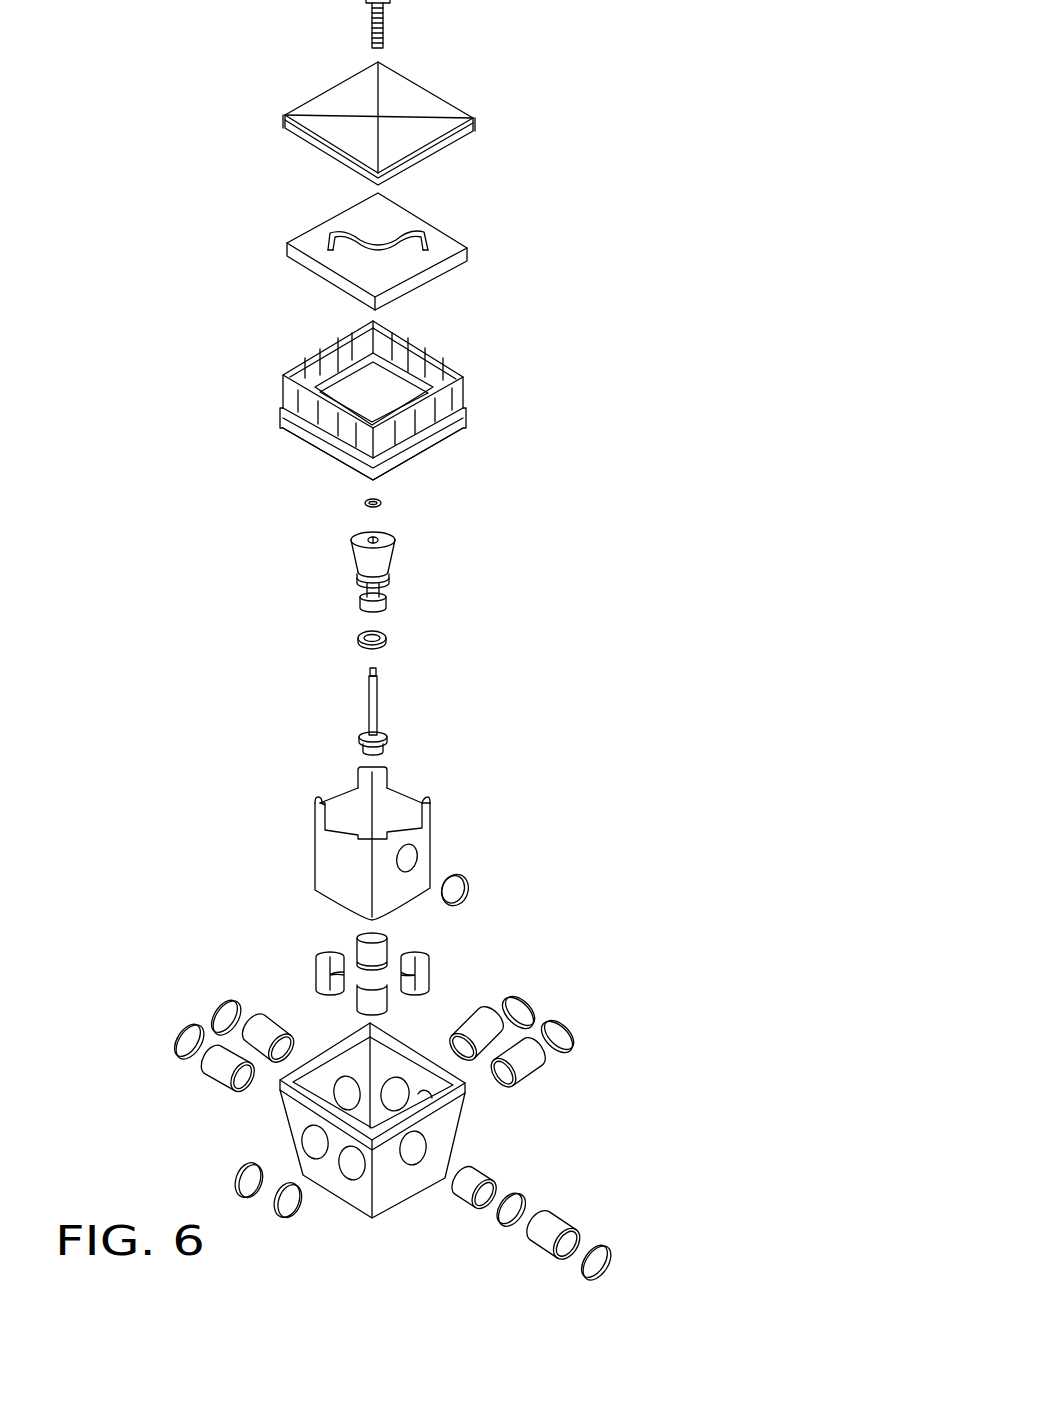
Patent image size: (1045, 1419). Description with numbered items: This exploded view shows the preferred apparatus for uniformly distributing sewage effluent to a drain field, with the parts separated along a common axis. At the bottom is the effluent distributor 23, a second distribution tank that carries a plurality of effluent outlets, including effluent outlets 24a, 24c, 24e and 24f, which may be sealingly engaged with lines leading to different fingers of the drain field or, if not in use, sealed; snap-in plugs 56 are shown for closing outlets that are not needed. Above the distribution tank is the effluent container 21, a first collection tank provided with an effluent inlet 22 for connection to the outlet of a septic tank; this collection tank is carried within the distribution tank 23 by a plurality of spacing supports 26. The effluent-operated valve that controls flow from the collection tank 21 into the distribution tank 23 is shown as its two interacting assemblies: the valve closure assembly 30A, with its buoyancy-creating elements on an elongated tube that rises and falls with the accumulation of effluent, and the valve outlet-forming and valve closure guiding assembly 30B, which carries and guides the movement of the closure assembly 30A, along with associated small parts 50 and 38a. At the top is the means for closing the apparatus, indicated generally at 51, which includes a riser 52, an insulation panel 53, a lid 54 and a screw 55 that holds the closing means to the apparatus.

The screw 55 is at (402, 22).
The lid 54 is at (498, 130).
The insulation panel 53 is at (490, 252).
The riser 52 is at (490, 392).
The cover assembly 51 is at (195, 389).
The washer 50 is at (404, 503).
The valve closure assembly 30A is at (416, 553).
The seal ring 38a is at (409, 637).
The valve outlet-forming and valve closure guiding assembly 30B is at (397, 708).
The effluent container 21 is at (452, 802).
The effluent inlet 22 is at (489, 889).
The spacing supports 26 is at (451, 972).
The effluent outlet 24a is at (270, 1030).
The effluent outlet 24c is at (207, 1073).
The effluent outlet 24e is at (557, 1007).
The effluent outlet 24f is at (559, 1068).
The effluent distributor 23 is at (469, 1140).
The snap-in plugs 56 is at (235, 1180).